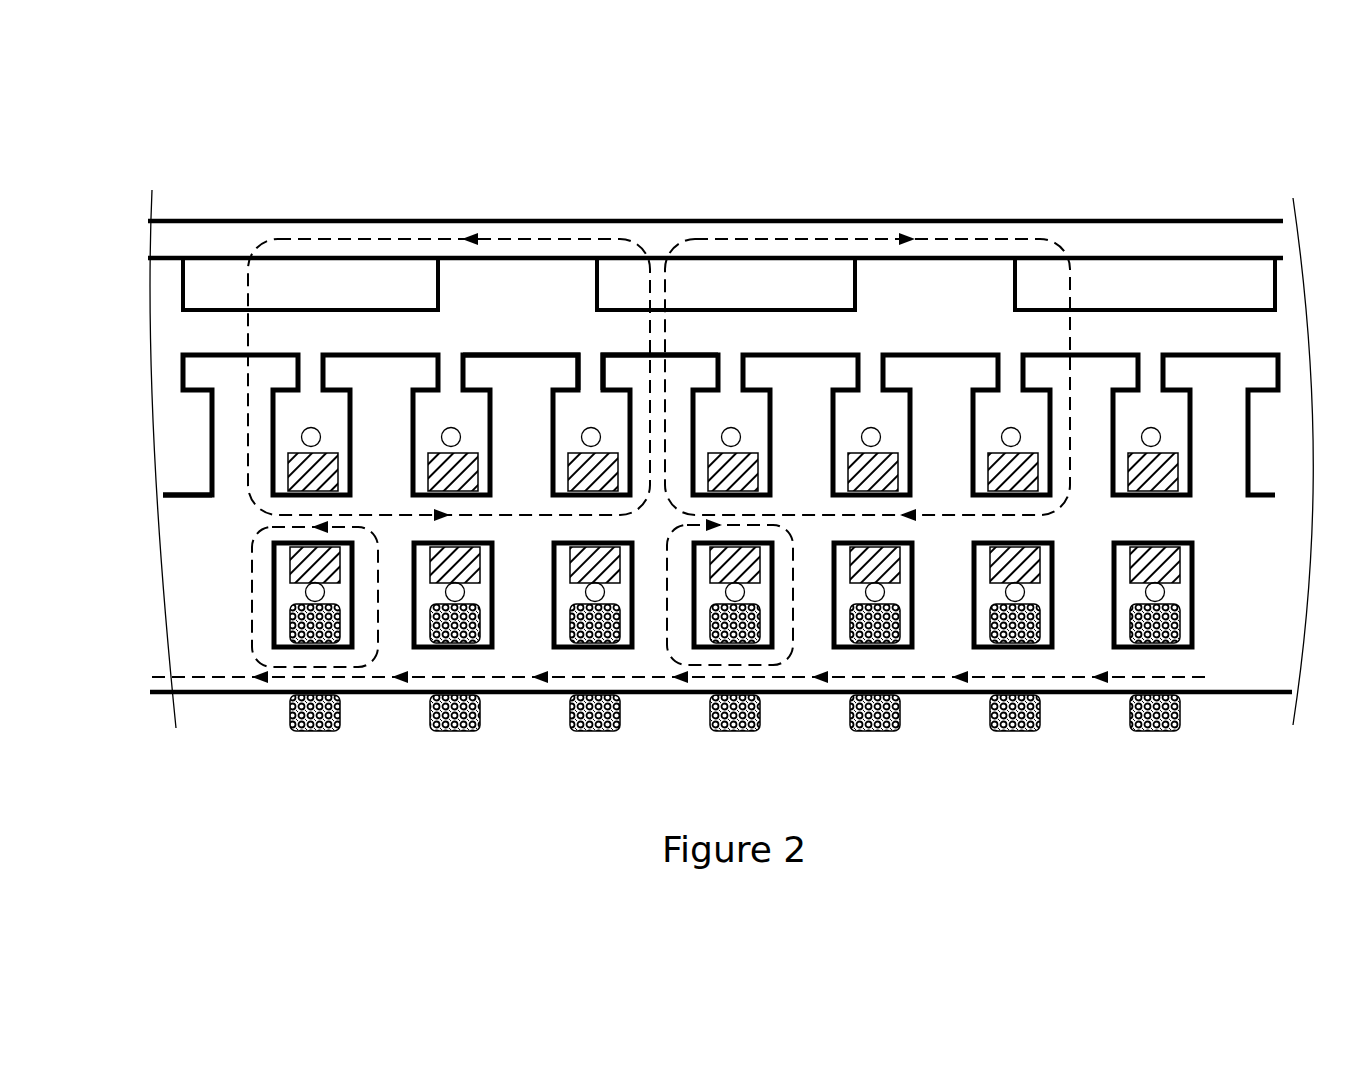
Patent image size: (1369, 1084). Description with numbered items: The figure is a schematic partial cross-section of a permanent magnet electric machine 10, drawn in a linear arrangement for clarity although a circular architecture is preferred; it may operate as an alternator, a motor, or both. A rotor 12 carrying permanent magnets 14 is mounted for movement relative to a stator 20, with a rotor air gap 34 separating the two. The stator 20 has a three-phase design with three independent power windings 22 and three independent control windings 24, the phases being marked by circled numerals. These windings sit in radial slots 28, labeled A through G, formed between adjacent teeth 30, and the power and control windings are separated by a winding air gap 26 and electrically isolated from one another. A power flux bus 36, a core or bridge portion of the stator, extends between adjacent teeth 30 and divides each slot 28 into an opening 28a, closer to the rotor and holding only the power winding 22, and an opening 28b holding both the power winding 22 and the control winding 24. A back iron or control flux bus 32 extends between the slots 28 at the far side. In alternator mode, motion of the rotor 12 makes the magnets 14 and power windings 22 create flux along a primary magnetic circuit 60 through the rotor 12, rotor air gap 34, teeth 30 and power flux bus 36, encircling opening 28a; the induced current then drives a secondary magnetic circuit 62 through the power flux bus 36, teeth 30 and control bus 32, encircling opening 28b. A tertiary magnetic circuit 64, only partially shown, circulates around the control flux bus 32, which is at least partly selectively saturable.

The permanent magnet electric machine 10 is at (155, 192).
The rotor 12 is at (1222, 228).
The permanent magnets 14 is at (210, 295).
The stator 20 is at (503, 352).
The power winding 22 is at (1175, 470).
The control winding 24 is at (1175, 622).
The winding air gap 26 is at (335, 593).
The radial slots 28 is at (287, 410).
The slot opening for power winding 28a is at (272, 423).
The slot opening for power and control windings 28b is at (275, 577).
The teeth 30 is at (632, 370).
The back iron (control flux bus) 32 is at (287, 657).
The rotor air gap 34 is at (1222, 330).
The power flux bus 36 is at (302, 503).
The primary magnetic circuit 60 is at (250, 473).
The secondary magnetic circuit 62 is at (252, 602).
The tertiary magnetic circuit 64 is at (313, 677).